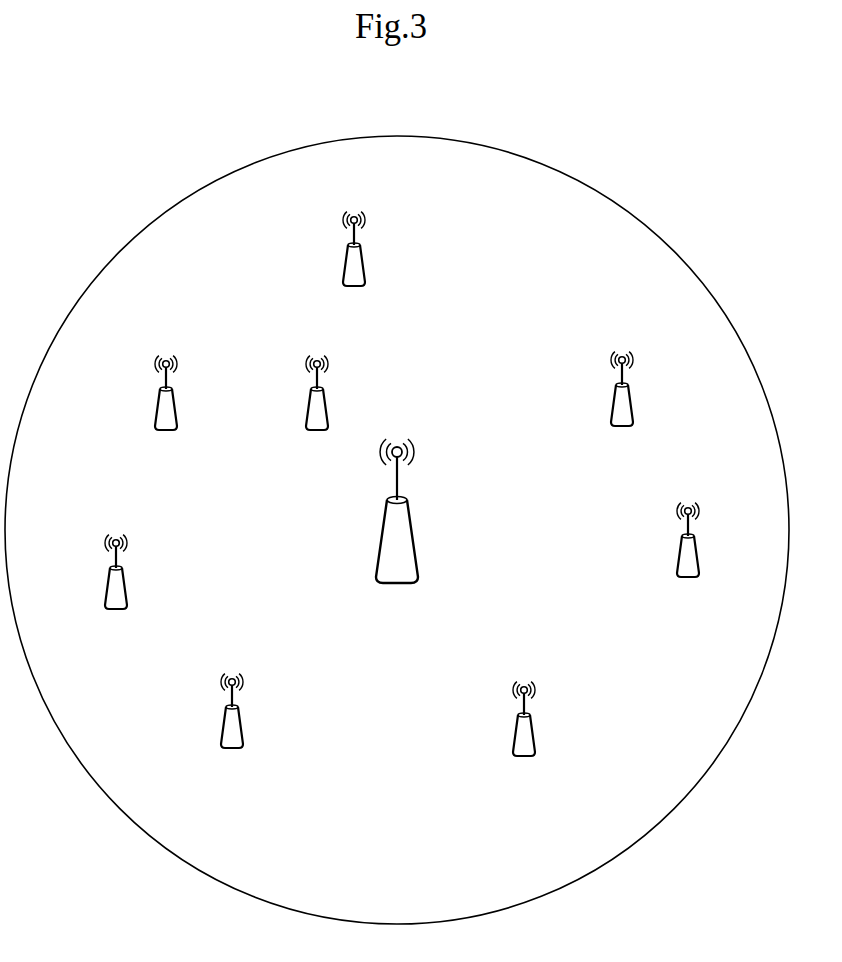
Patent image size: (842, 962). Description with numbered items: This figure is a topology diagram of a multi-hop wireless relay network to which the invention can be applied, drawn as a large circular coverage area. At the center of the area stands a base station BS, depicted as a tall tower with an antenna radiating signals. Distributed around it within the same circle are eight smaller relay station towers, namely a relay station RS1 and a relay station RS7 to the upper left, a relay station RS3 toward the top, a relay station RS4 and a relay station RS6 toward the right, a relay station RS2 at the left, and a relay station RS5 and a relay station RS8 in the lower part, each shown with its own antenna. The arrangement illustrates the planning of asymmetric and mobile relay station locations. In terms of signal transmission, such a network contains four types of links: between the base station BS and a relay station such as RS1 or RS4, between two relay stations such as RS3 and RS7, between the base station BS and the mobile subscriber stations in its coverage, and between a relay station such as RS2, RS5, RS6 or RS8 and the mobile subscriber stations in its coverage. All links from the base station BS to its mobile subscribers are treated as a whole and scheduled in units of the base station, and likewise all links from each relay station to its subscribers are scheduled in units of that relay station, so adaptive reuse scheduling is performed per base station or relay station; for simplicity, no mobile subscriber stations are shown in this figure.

The base station BS is at (397, 527).
The relay station RS1 is at (316, 408).
The relay station RS2 is at (115, 587).
The relay station RS3 is at (353, 264).
The relay station RS4 is at (621, 404).
The relay station RS5 is at (231, 726).
The relay station RS6 is at (687, 555).
The relay station RS7 is at (165, 408).
The relay station RS8 is at (523, 734).